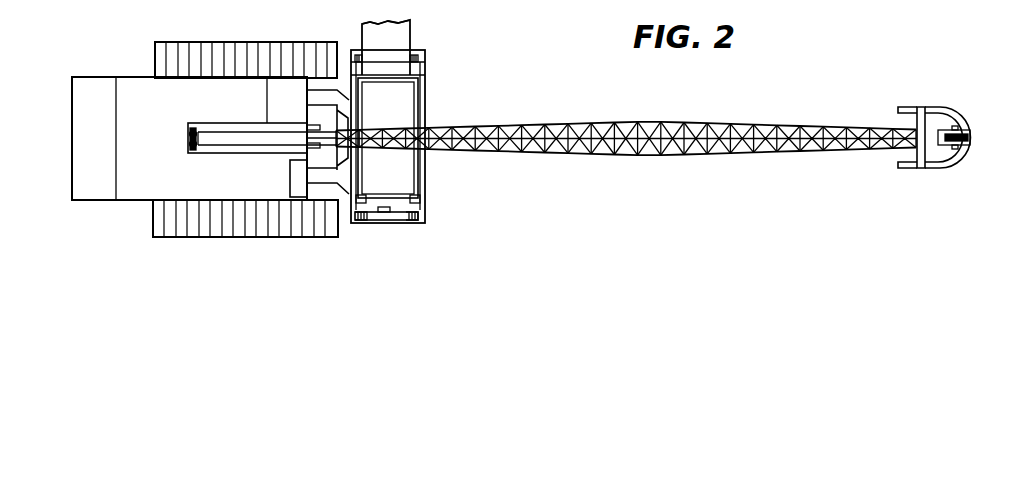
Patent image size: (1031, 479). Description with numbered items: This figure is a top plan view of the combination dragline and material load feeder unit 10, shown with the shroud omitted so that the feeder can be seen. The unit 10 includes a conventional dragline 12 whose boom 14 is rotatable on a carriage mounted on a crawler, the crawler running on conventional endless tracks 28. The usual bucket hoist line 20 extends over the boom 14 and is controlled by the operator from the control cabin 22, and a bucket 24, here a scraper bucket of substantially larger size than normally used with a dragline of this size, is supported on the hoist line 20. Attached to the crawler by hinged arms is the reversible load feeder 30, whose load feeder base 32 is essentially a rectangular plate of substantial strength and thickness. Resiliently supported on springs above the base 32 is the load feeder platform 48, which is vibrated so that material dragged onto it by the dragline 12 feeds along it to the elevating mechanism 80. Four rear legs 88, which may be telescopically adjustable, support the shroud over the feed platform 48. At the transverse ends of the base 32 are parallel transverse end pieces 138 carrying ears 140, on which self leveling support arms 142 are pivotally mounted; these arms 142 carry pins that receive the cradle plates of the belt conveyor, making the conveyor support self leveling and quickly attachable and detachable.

The combination dragline and material load feeder unit 10 is at (412, 128).
The dragline 12 is at (158, 181).
The boom 14 is at (626, 120).
The bucket hoist line 20 is at (228, 133).
The control cabin 22 is at (290, 188).
The bucket 24 is at (956, 112).
The endless tracks 28 is at (242, 60).
The reversible load feeder 30 is at (427, 189).
The load feeder base 32 is at (426, 112).
The load feeder platform 48 is at (398, 113).
The elevating mechanism 80 is at (413, 43).
The rear legs 88 is at (370, 12).
The transverse end pieces 138 is at (421, 72).
The ears 140 is at (388, 222).
The self leveling support arms 142 is at (420, 57).